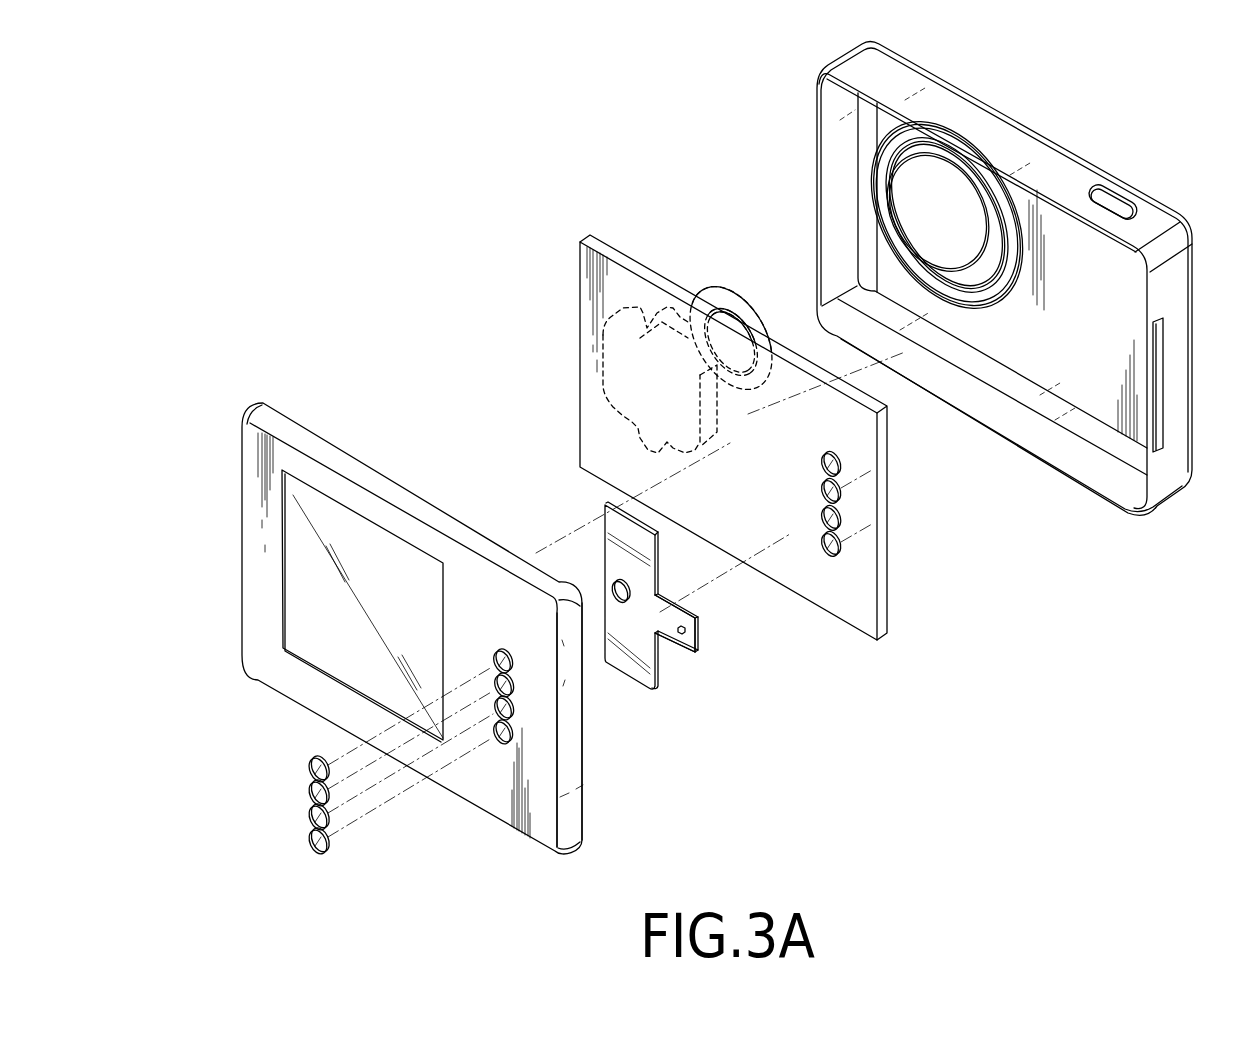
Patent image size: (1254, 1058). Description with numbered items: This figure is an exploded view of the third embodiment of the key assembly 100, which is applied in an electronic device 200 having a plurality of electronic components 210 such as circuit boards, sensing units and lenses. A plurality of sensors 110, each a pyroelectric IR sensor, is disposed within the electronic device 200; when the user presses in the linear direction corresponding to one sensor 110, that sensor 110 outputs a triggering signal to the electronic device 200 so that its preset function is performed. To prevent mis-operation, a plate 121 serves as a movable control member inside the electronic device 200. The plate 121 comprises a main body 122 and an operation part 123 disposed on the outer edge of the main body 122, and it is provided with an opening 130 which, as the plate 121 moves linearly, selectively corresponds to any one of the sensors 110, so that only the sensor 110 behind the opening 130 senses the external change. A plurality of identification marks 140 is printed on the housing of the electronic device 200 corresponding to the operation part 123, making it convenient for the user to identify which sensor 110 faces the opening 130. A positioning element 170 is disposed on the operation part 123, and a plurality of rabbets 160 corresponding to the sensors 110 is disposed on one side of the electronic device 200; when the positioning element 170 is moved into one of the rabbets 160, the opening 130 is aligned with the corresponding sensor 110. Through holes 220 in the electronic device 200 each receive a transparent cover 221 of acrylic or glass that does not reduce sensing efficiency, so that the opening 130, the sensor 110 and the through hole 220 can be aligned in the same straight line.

The key assembly 100 is at (670, 470).
The sensor 110 is at (841, 466).
The plate 121 is at (806, 718).
The main body 122 is at (689, 600).
The operation part 123 is at (697, 636).
The opening 130 is at (631, 590).
The identification mark 140 is at (537, 682).
The rabbet 160 is at (1152, 355).
The positioning element 170 is at (687, 630).
The electronic device 200 is at (257, 548).
The electronic component 210 is at (689, 300).
The through hole 220 is at (500, 655).
The transparent cover 221 is at (306, 766).